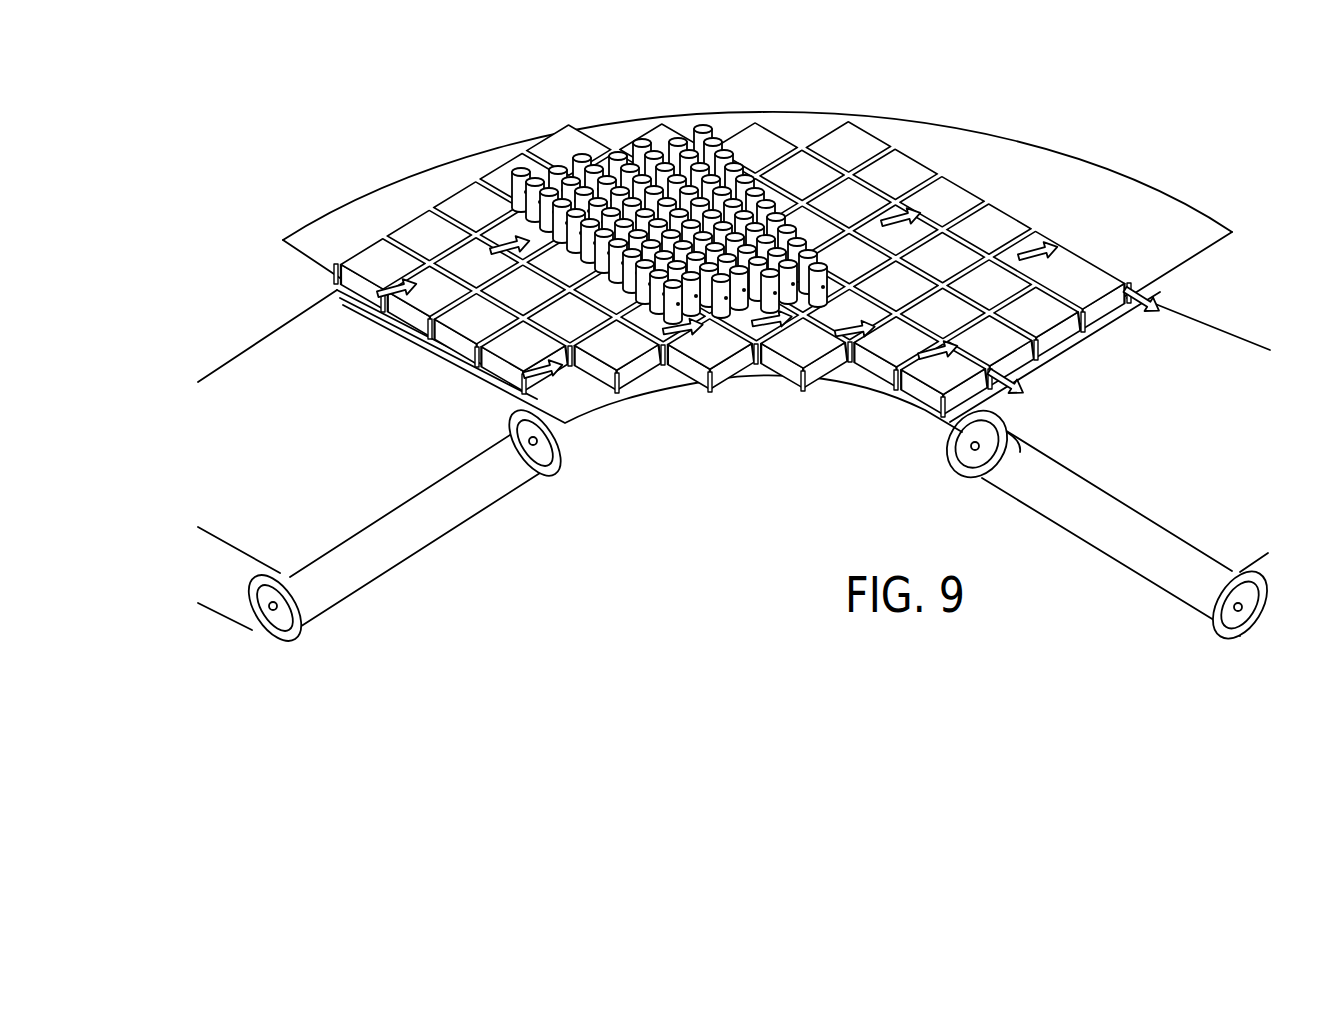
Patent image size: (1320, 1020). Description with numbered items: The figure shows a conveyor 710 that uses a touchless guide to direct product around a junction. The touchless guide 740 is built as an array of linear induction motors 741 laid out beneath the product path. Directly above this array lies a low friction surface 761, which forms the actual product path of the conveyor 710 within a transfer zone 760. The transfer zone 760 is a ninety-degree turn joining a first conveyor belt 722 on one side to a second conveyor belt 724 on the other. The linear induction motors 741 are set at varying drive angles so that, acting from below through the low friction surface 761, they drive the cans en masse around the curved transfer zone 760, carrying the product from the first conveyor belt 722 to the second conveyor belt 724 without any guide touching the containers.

The conveyor 710 is at (750, 72).
The first conveyor belt 722 is at (268, 339).
The second conveyor belt 724 is at (1115, 473).
The touchless guide 740 is at (722, 402).
The linear induction motors 741 is at (497, 288).
The transfer zone 760 is at (930, 457).
The low friction surface 761 is at (1138, 202).